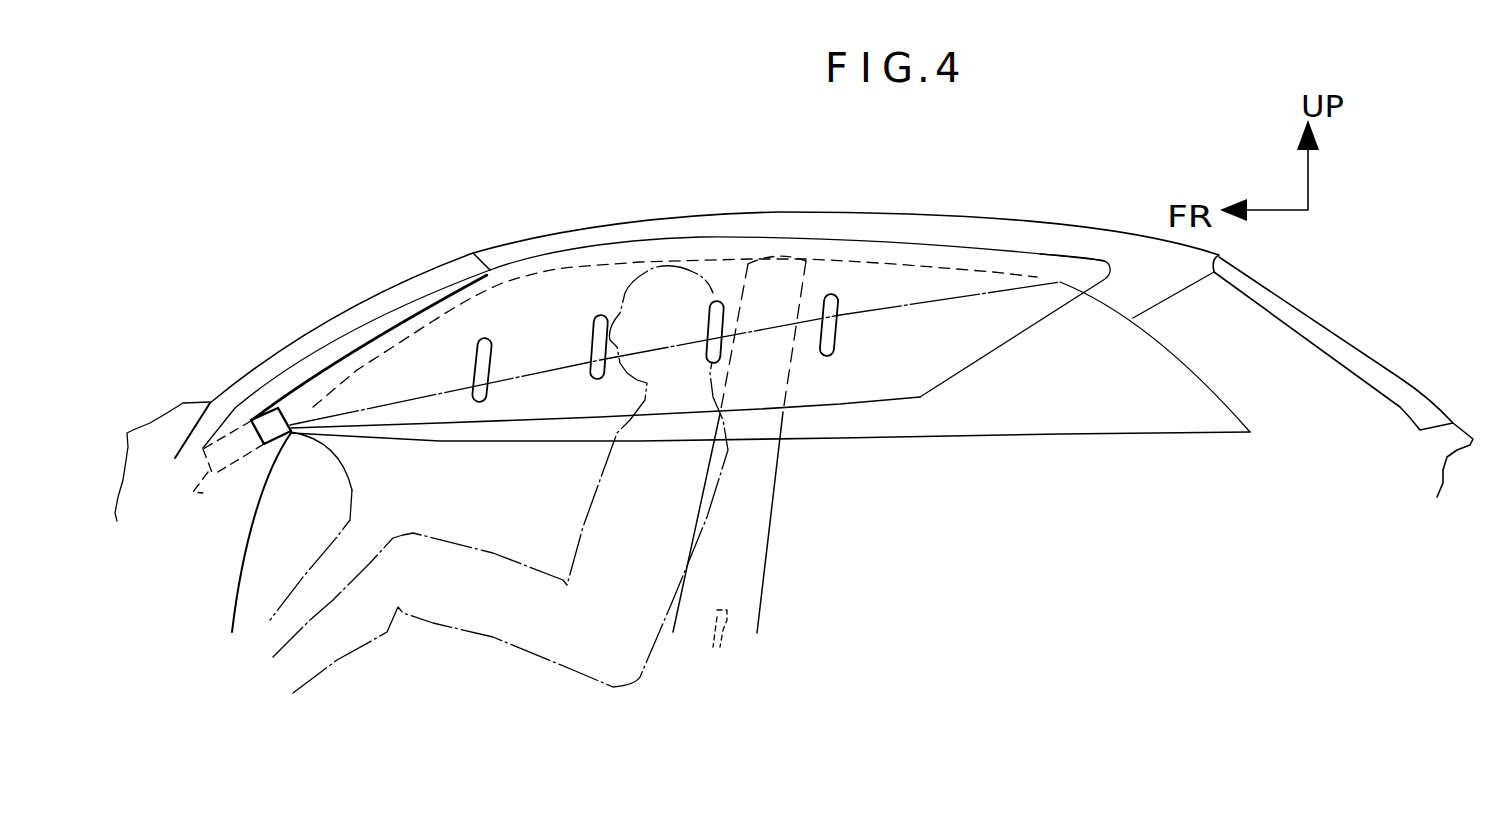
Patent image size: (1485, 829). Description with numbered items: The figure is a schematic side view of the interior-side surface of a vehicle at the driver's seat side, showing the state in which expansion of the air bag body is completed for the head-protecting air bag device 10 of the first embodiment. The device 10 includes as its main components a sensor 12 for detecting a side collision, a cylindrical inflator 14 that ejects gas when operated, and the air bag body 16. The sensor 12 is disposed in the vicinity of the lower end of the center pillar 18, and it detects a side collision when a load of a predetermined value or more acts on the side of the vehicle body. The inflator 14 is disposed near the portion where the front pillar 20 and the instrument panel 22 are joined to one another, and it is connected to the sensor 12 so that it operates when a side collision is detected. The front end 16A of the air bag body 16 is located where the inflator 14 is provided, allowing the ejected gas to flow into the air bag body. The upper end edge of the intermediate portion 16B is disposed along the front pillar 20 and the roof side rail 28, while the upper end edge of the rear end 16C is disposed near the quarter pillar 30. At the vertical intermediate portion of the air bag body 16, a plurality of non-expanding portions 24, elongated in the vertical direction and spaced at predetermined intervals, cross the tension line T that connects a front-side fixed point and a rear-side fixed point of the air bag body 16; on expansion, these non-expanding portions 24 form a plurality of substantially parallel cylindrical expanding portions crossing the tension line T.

The head-protecting air bag device 10 is at (898, 217).
The sensor 12 is at (733, 617).
The inflator 14 is at (237, 463).
The air bag body 16 is at (668, 243).
The front end 16A is at (312, 387).
The intermediate portion 16B is at (668, 363).
The rear end 16C is at (1068, 258).
The center pillar 18 is at (790, 420).
The front pillar 20 is at (437, 328).
The instrument panel 22 is at (372, 467).
The non-expanding portions 24 is at (585, 337).
The roof side rail 28 is at (822, 223).
The quarter pillar 30 is at (1153, 341).
The tension line T is at (947, 297).